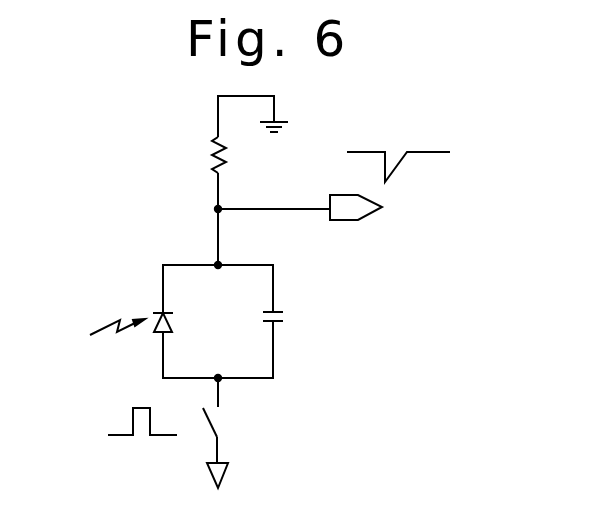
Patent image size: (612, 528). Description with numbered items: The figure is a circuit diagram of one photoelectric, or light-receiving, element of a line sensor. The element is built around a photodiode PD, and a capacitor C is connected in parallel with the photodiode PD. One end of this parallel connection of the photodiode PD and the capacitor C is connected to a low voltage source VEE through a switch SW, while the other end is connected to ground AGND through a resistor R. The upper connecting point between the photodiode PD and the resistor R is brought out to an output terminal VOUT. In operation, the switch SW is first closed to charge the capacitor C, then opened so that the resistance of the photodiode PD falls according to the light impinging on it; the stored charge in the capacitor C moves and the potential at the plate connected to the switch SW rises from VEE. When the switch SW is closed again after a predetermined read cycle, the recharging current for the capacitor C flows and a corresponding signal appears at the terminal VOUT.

The resistor R is at (207, 155).
The photodiode PD is at (151, 321).
The capacitor C is at (283, 318).
The switch SW is at (184, 435).
The ground AGND is at (306, 128).
The output terminal VOUT is at (334, 201).
The low voltage source VEE is at (242, 475).